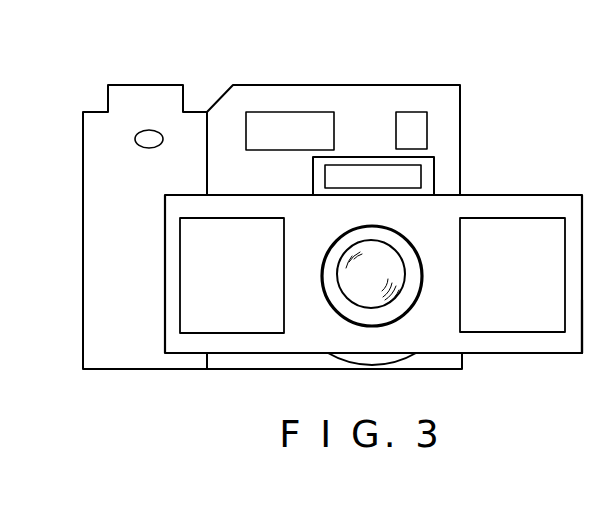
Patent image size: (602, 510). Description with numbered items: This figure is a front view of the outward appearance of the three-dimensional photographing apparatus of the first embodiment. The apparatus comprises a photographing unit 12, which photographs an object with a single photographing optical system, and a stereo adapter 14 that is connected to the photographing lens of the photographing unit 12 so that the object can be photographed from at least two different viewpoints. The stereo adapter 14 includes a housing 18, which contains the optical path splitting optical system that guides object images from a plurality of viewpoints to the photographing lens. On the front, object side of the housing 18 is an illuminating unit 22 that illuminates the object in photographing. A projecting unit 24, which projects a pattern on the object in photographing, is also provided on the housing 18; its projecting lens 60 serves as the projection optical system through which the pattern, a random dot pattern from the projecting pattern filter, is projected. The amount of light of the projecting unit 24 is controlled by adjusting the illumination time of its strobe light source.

The photographing unit 12 is at (357, 102).
The stereo adapter 14 is at (550, 200).
The housing 18 is at (567, 355).
The illuminating unit 22 is at (434, 172).
The projecting unit 24 is at (410, 308).
The projecting lens 60 is at (389, 244).